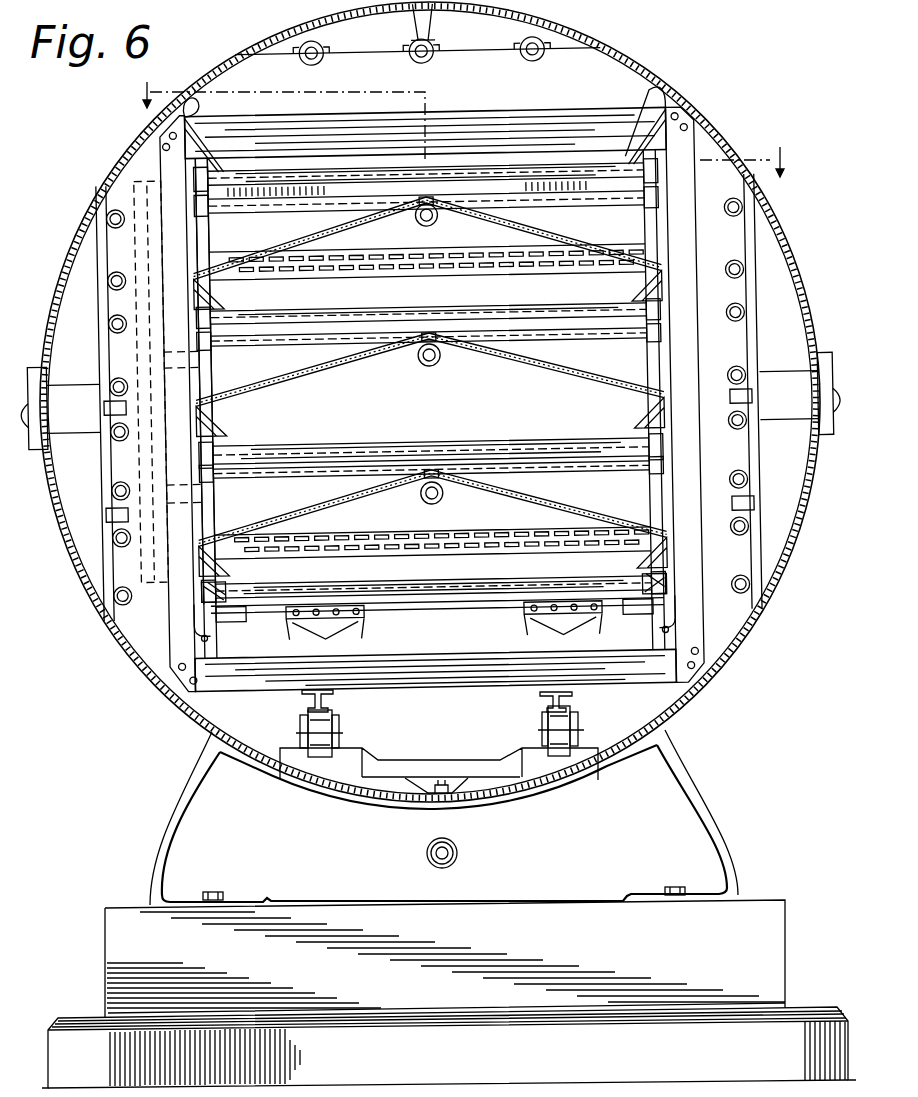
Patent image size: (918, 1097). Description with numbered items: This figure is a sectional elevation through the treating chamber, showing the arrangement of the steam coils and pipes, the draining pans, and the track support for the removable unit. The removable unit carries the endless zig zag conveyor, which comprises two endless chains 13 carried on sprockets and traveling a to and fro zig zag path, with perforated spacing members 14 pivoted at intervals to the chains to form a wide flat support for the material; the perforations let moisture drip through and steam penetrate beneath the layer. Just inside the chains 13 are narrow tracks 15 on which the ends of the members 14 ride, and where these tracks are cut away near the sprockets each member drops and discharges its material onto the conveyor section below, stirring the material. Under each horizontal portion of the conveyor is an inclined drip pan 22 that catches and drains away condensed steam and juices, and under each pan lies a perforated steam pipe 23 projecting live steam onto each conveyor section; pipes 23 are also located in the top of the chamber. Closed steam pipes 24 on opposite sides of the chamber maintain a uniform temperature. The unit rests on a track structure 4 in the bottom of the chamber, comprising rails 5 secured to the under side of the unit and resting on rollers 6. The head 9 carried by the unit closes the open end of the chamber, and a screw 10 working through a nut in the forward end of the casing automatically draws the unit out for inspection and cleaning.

The track structure 4 is at (347, 769).
The rails 5 is at (302, 694).
The rollers 6 is at (322, 733).
The head 9 is at (462, 129).
The screw 10 is at (458, 851).
The endless chains 13 is at (209, 584).
The spacing members 14 is at (406, 249).
The tracks 15 is at (226, 598).
The drip pans 22 is at (270, 240).
The steam pipe 23 is at (438, 62).
The closed steam pipes 24 is at (128, 254).